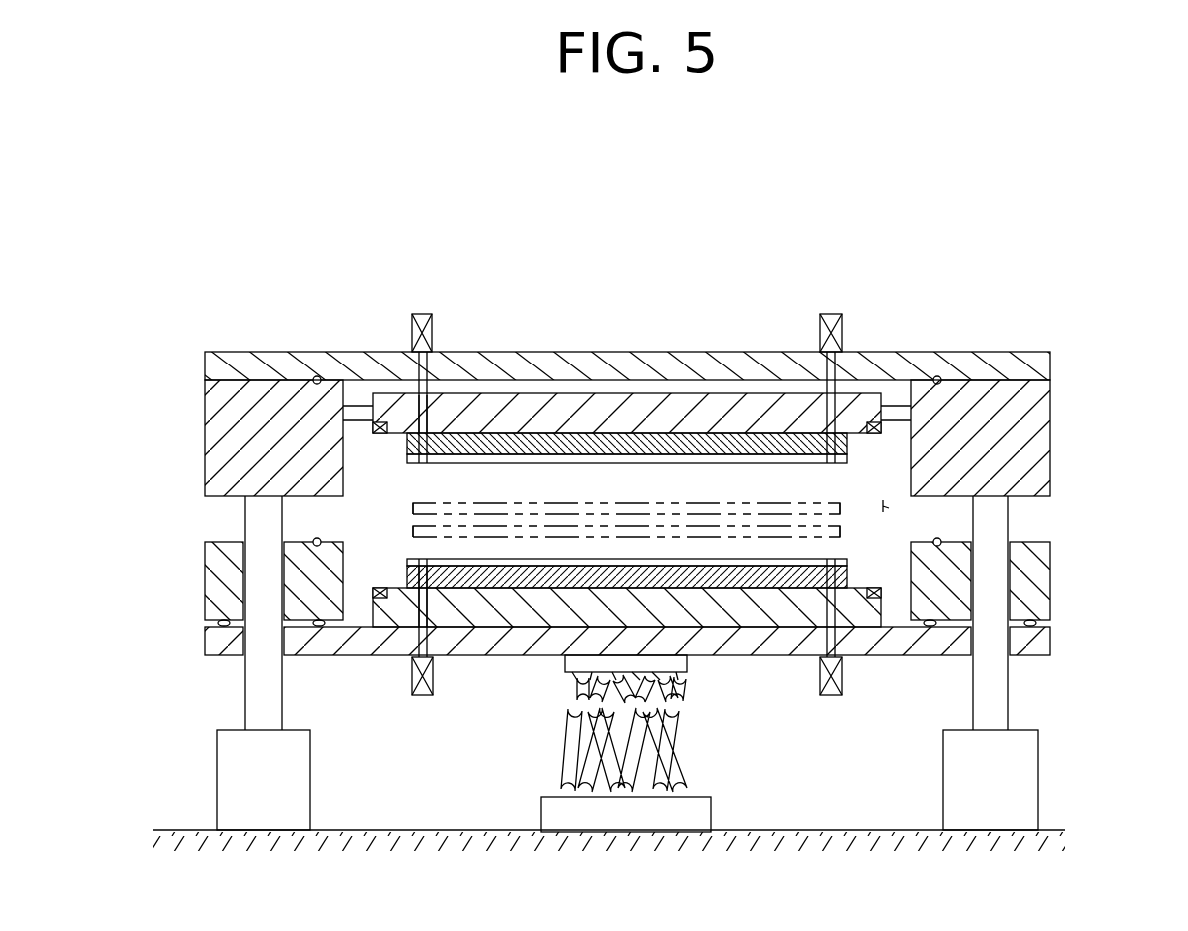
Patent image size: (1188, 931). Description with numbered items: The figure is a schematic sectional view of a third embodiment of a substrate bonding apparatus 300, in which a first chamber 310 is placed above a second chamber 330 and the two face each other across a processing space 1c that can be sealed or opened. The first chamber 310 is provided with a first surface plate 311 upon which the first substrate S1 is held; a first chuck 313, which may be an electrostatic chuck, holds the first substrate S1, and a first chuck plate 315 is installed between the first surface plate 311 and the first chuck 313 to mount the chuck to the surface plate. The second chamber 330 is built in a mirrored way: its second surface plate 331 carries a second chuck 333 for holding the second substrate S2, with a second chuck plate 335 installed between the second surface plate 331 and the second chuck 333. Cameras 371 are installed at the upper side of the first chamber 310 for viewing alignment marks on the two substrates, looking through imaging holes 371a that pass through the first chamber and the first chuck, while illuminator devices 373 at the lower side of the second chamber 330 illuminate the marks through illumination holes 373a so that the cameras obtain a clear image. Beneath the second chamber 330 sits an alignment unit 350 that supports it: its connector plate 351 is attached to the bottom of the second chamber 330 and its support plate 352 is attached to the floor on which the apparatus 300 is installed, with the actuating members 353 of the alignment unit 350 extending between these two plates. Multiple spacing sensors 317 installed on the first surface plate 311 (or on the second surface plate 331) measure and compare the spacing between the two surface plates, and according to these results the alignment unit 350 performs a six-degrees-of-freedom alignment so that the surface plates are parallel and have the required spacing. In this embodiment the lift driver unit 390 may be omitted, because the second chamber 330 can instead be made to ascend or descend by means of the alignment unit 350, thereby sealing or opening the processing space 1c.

The substrate bonding apparatus 300 is at (742, 271).
The first chamber 310 is at (1053, 410).
The first surface plate 311 is at (343, 407).
The first chuck 313 is at (407, 462).
The first chuck plate 315 is at (407, 448).
The spacing sensors 317 is at (343, 420).
The second chamber 330 is at (1053, 590).
The second surface plate 331 is at (385, 610).
The second chuck 333 is at (407, 560).
The second chuck plate 335 is at (407, 578).
The alignment unit 350 is at (720, 743).
The connector plate 351 is at (680, 662).
The support plate 352 is at (700, 813).
The actuator 353 is at (683, 747).
The cameras 371 is at (432, 330).
The imaging holes 371a is at (430, 420).
The illuminator devices 373 is at (433, 677).
The illumination holes 373a is at (428, 580).
The lift driver unit 390 is at (217, 778).
The processing space 1c is at (889, 508).
The first substrate S1 is at (823, 499).
The second substrate S2 is at (817, 537).